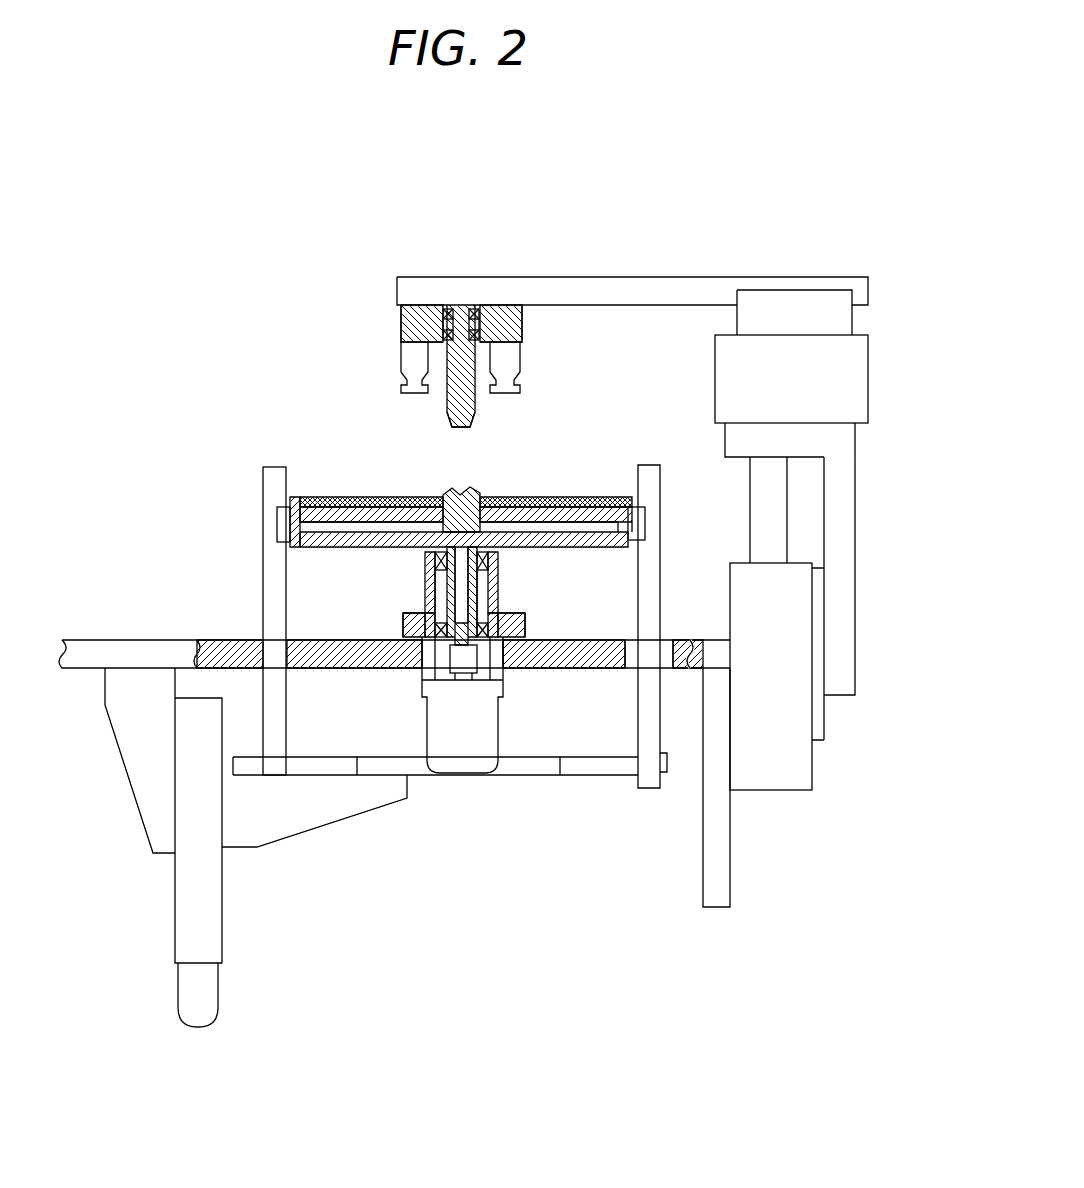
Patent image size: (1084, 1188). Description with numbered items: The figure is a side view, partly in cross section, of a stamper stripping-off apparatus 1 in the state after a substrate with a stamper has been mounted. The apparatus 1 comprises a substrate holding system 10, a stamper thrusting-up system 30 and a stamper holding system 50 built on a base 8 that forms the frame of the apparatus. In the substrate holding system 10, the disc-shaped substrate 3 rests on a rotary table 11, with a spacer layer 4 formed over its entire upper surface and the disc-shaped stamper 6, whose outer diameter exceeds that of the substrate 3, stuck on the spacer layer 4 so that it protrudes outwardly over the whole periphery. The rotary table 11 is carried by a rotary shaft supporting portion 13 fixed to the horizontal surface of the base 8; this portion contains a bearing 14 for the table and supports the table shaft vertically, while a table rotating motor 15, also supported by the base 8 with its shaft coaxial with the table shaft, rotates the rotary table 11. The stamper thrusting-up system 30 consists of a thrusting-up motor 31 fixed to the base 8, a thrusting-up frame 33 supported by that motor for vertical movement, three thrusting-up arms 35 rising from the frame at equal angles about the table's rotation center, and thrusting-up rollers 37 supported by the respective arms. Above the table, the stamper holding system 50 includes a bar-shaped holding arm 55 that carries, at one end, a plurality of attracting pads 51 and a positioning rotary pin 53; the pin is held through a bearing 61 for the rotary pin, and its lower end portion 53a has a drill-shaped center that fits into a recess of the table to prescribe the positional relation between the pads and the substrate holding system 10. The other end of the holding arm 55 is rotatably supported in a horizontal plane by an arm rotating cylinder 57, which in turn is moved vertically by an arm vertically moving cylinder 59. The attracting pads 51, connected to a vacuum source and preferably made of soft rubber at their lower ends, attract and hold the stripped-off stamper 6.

The apparatus 1 is at (608, 176).
The stamper holding system 50 is at (645, 474).
The holding arm 55 is at (636, 284).
The arm rotating cylinder 57 is at (850, 385).
The arm vertically moving cylinder 59 is at (795, 765).
The attracting pads 51 is at (512, 352).
The positioning rotary pin 53 is at (462, 376).
The lower end portion 53a is at (463, 428).
The bearing for the rotary pin 61 is at (474, 310).
The substrate holding system 10 is at (421, 657).
The stamper 6 is at (293, 498).
The substrate 3 is at (310, 500).
The spacer layer 4 is at (333, 508).
The rotary table 11 is at (300, 542).
The thrusting-up rollers 37 is at (284, 515).
The bearing for the table 14 is at (448, 562).
The rotary shaft supporting portion 13 is at (530, 625).
The table rotating motor 15 is at (456, 766).
The stamper thrusting-up system 30 is at (394, 746).
The base 8 is at (155, 645).
The thrusting-up arms 35 is at (270, 607).
The thrusting-up motor 31 is at (185, 912).
The thrusting-up frame 33 is at (287, 828).